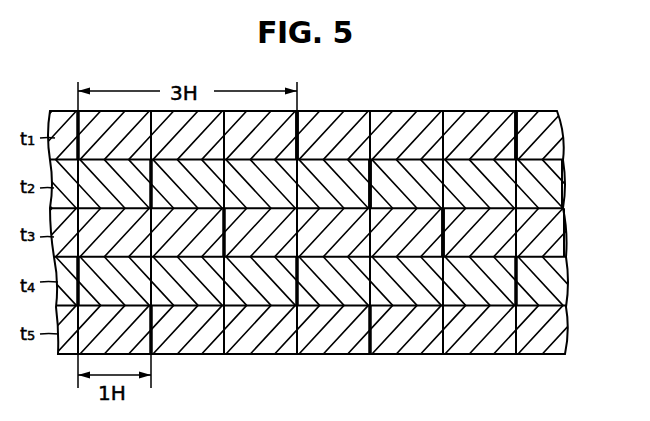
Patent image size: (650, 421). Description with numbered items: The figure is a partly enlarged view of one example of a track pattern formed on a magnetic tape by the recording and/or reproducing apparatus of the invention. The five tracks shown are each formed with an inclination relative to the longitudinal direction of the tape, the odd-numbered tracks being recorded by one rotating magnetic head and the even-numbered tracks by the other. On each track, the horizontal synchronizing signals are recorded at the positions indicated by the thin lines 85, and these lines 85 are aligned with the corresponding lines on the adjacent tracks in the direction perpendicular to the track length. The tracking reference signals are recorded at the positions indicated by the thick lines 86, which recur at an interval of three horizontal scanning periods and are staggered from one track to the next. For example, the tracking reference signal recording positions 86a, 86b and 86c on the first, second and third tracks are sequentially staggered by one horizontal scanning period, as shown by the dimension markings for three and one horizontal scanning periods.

The thin lines 85 is at (369, 128).
The thick lines 86 is at (299, 118).
The tracking reference signal recording position 86a is at (406, 107).
The tracking reference signal recording position 86b is at (466, 131).
The tracking reference signal recording position 86c is at (535, 236).